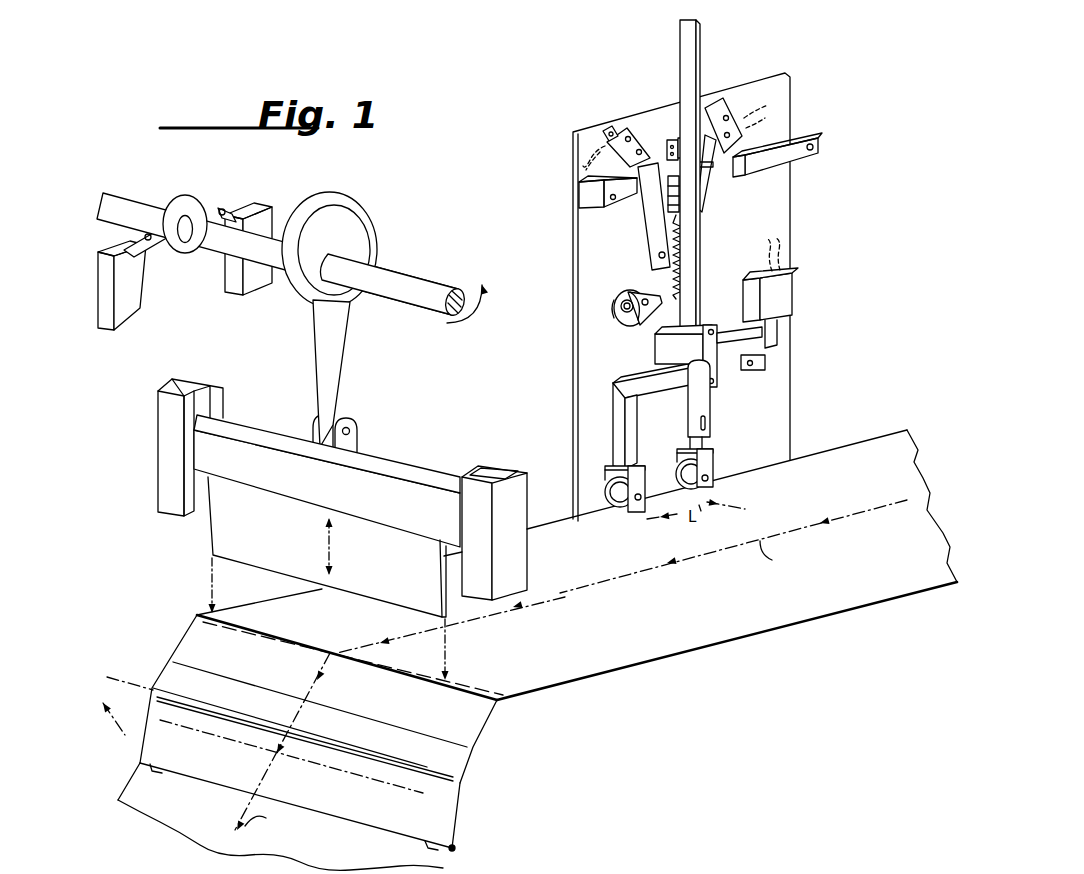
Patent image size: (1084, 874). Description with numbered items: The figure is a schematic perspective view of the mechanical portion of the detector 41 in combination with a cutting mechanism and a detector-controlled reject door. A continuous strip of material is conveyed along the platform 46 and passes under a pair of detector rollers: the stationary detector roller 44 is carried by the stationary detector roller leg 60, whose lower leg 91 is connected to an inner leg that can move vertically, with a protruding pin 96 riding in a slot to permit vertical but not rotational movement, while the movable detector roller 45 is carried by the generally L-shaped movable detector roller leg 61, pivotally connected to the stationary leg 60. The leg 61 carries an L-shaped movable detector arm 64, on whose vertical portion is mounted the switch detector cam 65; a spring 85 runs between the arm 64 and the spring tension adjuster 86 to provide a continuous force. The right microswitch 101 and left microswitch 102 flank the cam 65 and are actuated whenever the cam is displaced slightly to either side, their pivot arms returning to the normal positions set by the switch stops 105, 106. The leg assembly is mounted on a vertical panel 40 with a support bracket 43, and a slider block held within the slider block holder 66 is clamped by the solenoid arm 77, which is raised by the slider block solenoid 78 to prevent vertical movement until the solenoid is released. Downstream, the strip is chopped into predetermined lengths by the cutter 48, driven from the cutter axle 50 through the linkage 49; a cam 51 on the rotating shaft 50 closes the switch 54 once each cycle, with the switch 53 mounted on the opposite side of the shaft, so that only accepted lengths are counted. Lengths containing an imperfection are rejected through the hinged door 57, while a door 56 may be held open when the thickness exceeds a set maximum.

The mounting panel 40 is at (792, 192).
The mechanical detector 41 is at (814, 297).
The support bracket 43 is at (814, 138).
The stationary detector roller 44 is at (708, 489).
The movable detector roller 45 is at (632, 514).
The platform 46 is at (912, 460).
The cutter 48 is at (204, 538).
The linkage 49 is at (342, 360).
The cutter axle 50 is at (292, 239).
The cam 51 is at (188, 197).
The switch 53 is at (228, 206).
The switch 54 is at (155, 244).
The door 56 is at (495, 722).
The hinged door 57 is at (458, 813).
The stationary detector roller leg 60 is at (698, 398).
The movable detector roller leg 61 is at (625, 378).
The movable detector arm 64 is at (699, 282).
The switch detector cam 65 is at (667, 140).
The slider block holder 66 is at (657, 334).
The solenoid arm 77 is at (727, 353).
The slider block solenoid 78 is at (781, 297).
The spring 85 is at (681, 266).
The spring tension adjuster 86 is at (617, 296).
The lower leg 91 is at (728, 465).
The protruding pin 96 is at (700, 422).
The right microswitch 101 is at (708, 106).
The left microswitch 102 is at (622, 143).
The switch stop 105 is at (666, 207).
The switch stop 106 is at (668, 194).